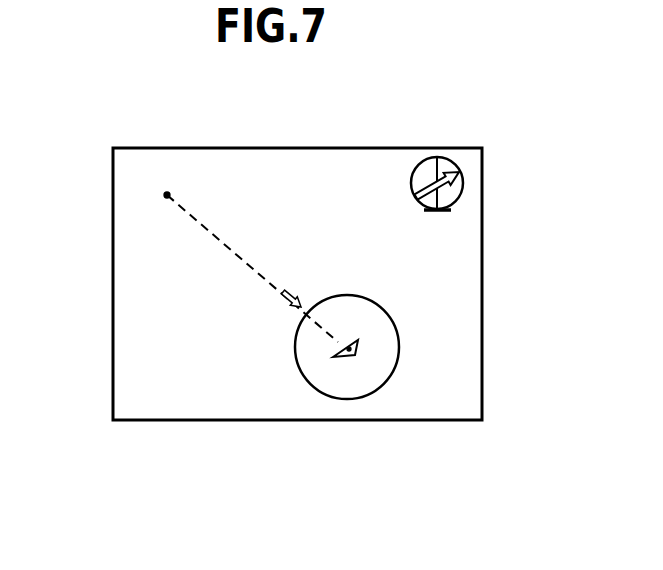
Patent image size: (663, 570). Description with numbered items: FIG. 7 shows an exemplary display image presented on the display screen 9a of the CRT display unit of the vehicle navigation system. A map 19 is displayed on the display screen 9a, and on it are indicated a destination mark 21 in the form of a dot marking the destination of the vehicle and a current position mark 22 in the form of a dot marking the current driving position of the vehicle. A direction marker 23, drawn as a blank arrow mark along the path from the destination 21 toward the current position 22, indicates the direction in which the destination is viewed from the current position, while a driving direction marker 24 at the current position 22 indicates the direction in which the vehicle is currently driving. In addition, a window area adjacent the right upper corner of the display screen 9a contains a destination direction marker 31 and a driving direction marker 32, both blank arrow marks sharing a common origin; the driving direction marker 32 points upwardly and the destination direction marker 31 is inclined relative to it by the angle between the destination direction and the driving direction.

The display screen 9a is at (484, 368).
The map 19 is at (457, 297).
The destination mark 21 is at (167, 195).
The current position mark 22 is at (355, 352).
The direction marker 23 is at (287, 290).
The driving direction marker 24 is at (340, 357).
The destination direction marker 31 is at (460, 180).
The driving direction marker 32 is at (441, 158).